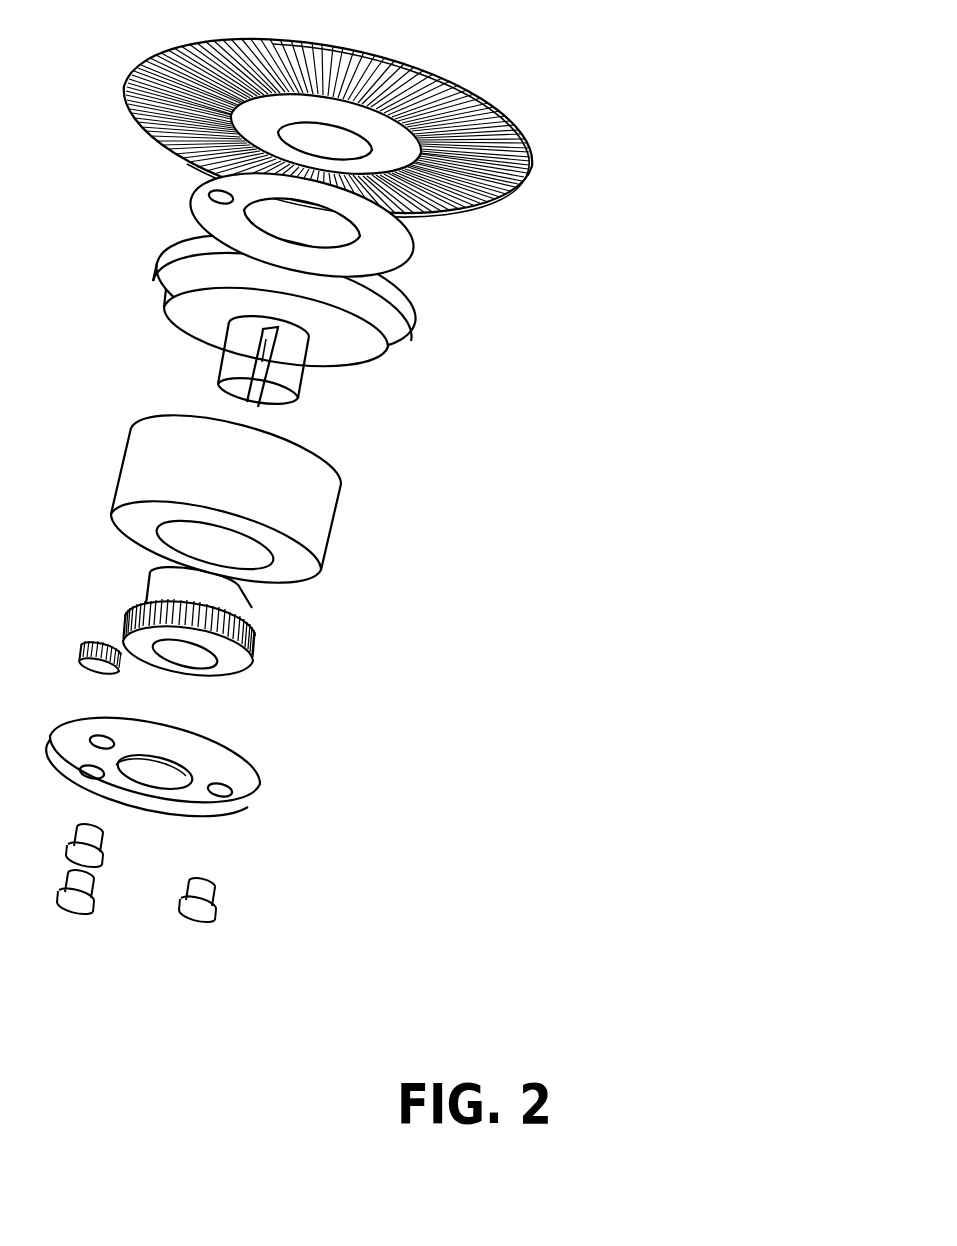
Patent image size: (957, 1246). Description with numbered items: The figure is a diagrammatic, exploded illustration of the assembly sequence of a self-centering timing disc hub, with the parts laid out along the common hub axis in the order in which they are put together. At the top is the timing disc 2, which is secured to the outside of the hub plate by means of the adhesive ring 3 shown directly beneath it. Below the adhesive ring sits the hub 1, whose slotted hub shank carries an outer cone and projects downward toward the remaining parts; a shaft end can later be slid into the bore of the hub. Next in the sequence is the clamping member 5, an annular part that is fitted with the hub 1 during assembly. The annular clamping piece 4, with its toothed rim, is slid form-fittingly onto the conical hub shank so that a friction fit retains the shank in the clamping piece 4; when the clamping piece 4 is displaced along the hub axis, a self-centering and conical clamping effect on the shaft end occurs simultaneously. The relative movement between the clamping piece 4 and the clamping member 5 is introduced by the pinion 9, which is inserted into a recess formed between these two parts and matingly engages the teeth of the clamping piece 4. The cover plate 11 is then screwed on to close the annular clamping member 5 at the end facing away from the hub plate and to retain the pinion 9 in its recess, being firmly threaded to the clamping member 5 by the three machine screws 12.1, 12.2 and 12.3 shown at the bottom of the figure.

The hub 1 is at (410, 337).
The timing disc 2 is at (470, 120).
The adhesive ring 3 is at (410, 250).
The clamping piece 4 is at (256, 650).
The clamping member 5 is at (333, 523).
The pinion 9 is at (118, 660).
The cover plate 11 is at (262, 785).
The machine screw 12.1 is at (397, 873).
The machine screw 12.2 is at (93, 912).
The machine screw 12.3 is at (395, 892).